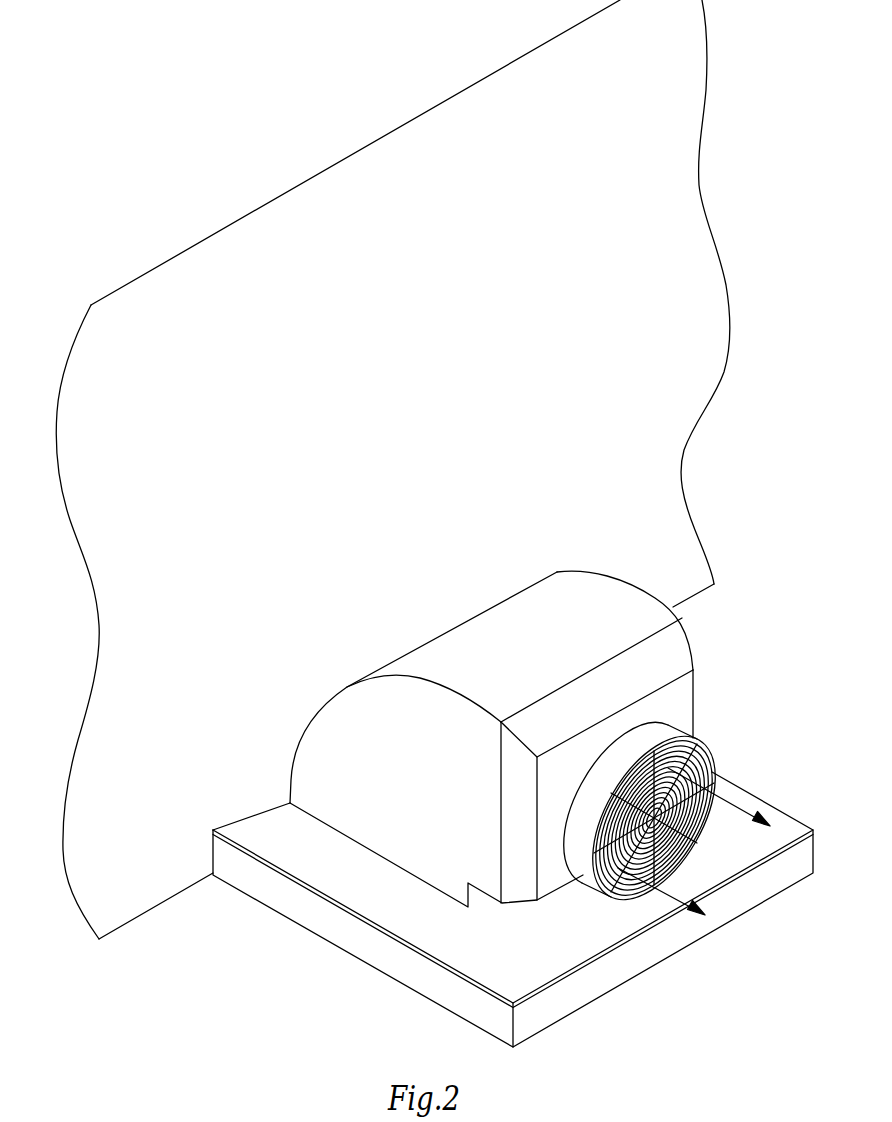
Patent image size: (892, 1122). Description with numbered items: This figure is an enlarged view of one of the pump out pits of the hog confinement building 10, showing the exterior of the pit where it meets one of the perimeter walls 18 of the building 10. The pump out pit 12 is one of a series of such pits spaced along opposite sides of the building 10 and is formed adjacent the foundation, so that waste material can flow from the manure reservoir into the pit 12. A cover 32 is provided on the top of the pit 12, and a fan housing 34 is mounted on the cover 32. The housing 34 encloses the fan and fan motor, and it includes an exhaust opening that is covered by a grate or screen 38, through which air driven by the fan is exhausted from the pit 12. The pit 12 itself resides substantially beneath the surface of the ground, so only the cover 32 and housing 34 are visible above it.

The hog confinement building 10 is at (682, 95).
The perimeter walls 18 is at (683, 239).
The pump out pit 12 is at (428, 621).
The fan housing 34 is at (677, 645).
The cover 32 is at (253, 822).
The grate or screen 38 is at (700, 763).